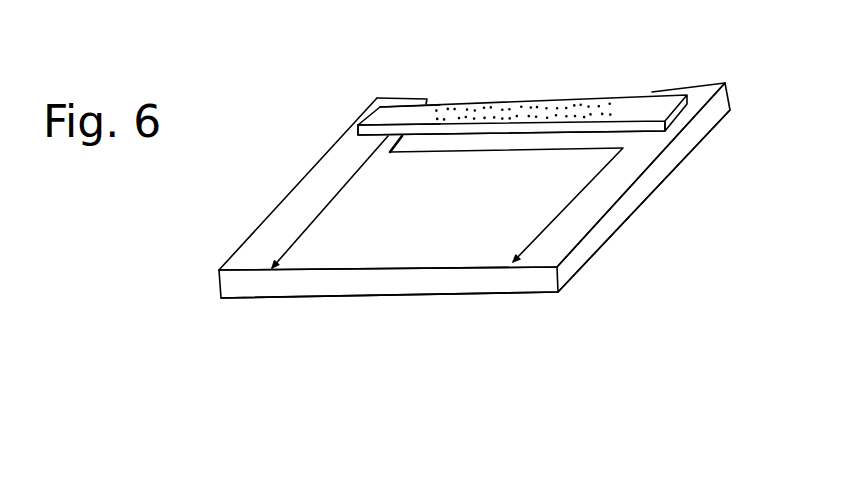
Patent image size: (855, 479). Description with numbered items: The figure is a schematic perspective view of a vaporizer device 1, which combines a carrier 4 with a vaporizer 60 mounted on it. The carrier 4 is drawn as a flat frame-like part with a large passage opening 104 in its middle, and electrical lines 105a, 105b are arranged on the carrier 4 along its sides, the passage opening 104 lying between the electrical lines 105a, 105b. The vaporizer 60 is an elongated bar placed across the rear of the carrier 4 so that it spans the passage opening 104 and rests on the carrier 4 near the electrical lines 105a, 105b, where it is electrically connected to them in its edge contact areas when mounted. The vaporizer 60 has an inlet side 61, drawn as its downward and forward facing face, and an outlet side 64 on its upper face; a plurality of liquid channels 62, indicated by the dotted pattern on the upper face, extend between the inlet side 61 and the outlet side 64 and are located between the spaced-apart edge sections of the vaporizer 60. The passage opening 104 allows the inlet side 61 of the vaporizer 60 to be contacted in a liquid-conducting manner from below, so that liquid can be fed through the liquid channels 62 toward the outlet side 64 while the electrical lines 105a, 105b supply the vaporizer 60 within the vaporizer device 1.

The vaporizer device 1 is at (464, 254).
The carrier 4 is at (405, 247).
The vaporizer 60 is at (557, 110).
The inlet side 61 is at (608, 133).
The liquid channels 62 is at (533, 108).
The outlet side 64 is at (433, 115).
The passage opening 104 is at (557, 148).
The electrical line 105a is at (547, 247).
The electrical line 105b is at (263, 250).